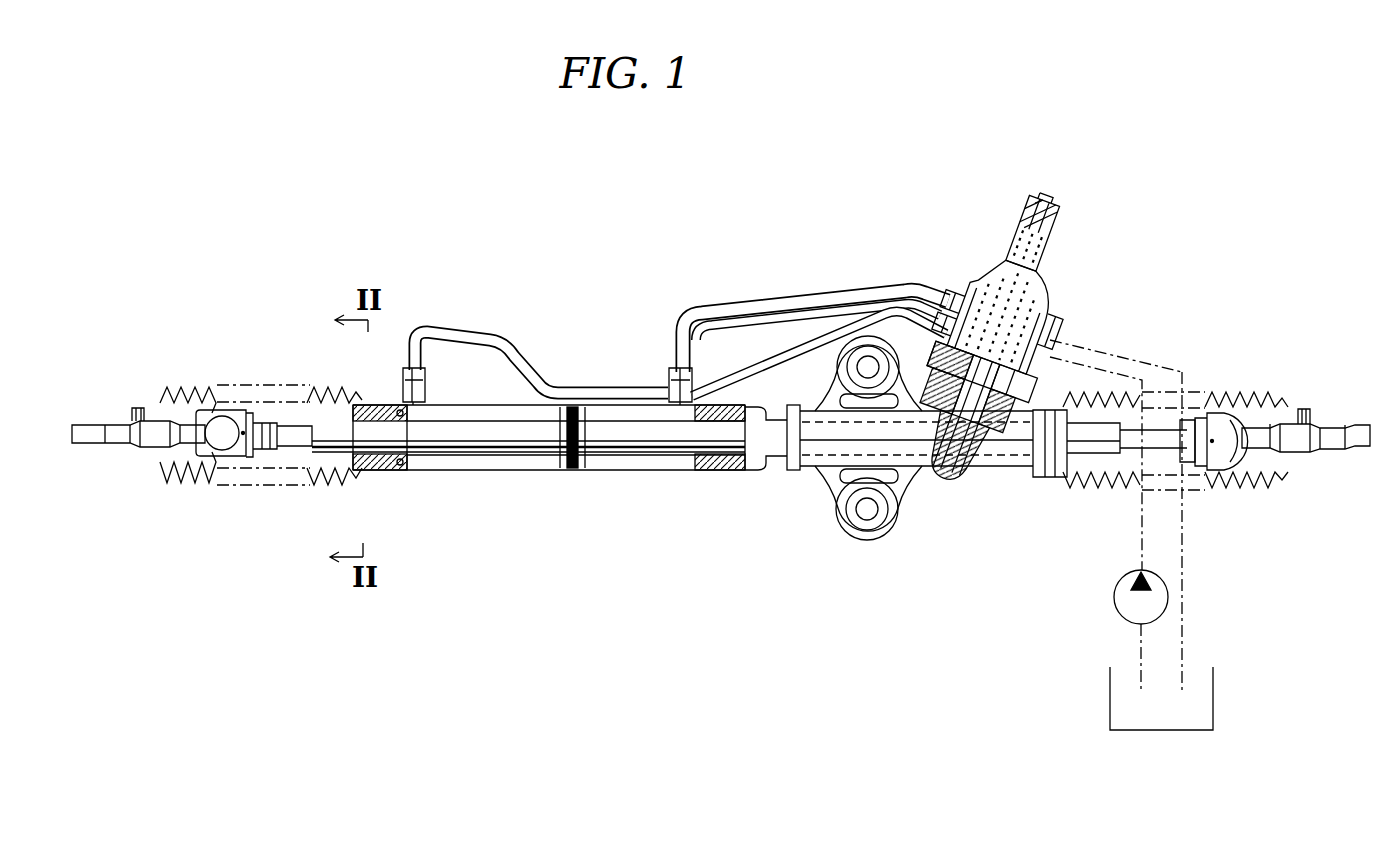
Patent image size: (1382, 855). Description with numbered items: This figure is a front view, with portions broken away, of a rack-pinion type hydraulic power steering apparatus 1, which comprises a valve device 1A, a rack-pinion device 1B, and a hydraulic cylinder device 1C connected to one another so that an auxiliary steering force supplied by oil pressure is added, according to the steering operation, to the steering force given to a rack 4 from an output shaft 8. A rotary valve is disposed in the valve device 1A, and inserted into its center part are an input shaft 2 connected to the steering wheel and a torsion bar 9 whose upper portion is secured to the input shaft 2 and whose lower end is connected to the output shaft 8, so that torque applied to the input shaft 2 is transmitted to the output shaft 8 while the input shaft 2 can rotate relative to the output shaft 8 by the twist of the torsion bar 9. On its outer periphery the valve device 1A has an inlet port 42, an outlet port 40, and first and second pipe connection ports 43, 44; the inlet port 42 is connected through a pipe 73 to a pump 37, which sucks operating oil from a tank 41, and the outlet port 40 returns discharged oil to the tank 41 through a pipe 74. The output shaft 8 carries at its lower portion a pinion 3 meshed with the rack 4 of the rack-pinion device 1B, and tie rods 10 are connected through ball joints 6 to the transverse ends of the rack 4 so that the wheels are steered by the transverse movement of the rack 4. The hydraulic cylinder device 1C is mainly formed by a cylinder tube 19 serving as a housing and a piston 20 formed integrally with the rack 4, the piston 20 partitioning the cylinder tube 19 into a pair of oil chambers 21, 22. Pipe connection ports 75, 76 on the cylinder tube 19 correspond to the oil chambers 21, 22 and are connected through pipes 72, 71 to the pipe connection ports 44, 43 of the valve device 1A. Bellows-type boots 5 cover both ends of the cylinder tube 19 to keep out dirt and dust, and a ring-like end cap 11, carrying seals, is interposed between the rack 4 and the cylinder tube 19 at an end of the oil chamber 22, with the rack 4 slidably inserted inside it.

The steering apparatus 1 is at (858, 216).
The valve device 1A is at (1026, 386).
The rack-pinion device 1B is at (947, 488).
The hydraulic cylinder device 1C is at (825, 456).
The input shaft 2 is at (1050, 223).
The pinion 3 is at (968, 482).
The rack 4 is at (1085, 478).
The bellows-type boot 5 is at (188, 388).
The ball joint 6 is at (226, 457).
The output shaft 8 is at (1006, 463).
The torsion bar 9 is at (1040, 204).
The tie rod 10 is at (92, 443).
The end cap 11 is at (387, 471).
The cylinder tube 19 is at (576, 500).
The piston 20 is at (568, 443).
The oil chamber 21 is at (673, 471).
The oil chamber 22 is at (397, 500).
The pump 37 is at (1126, 603).
The outlet port 40 is at (1058, 325).
The tank 41 is at (1130, 722).
The inlet port 42 is at (1058, 354).
The first pipe connection port 43 is at (938, 295).
The second pipe connection port 44 is at (948, 292).
The pipe 71 is at (507, 326).
The pipe 72 is at (710, 304).
The pipe 73 is at (1143, 528).
The pipe 74 is at (1183, 620).
The pipe connection port 75 is at (657, 380).
The pipe connection port 76 is at (418, 368).